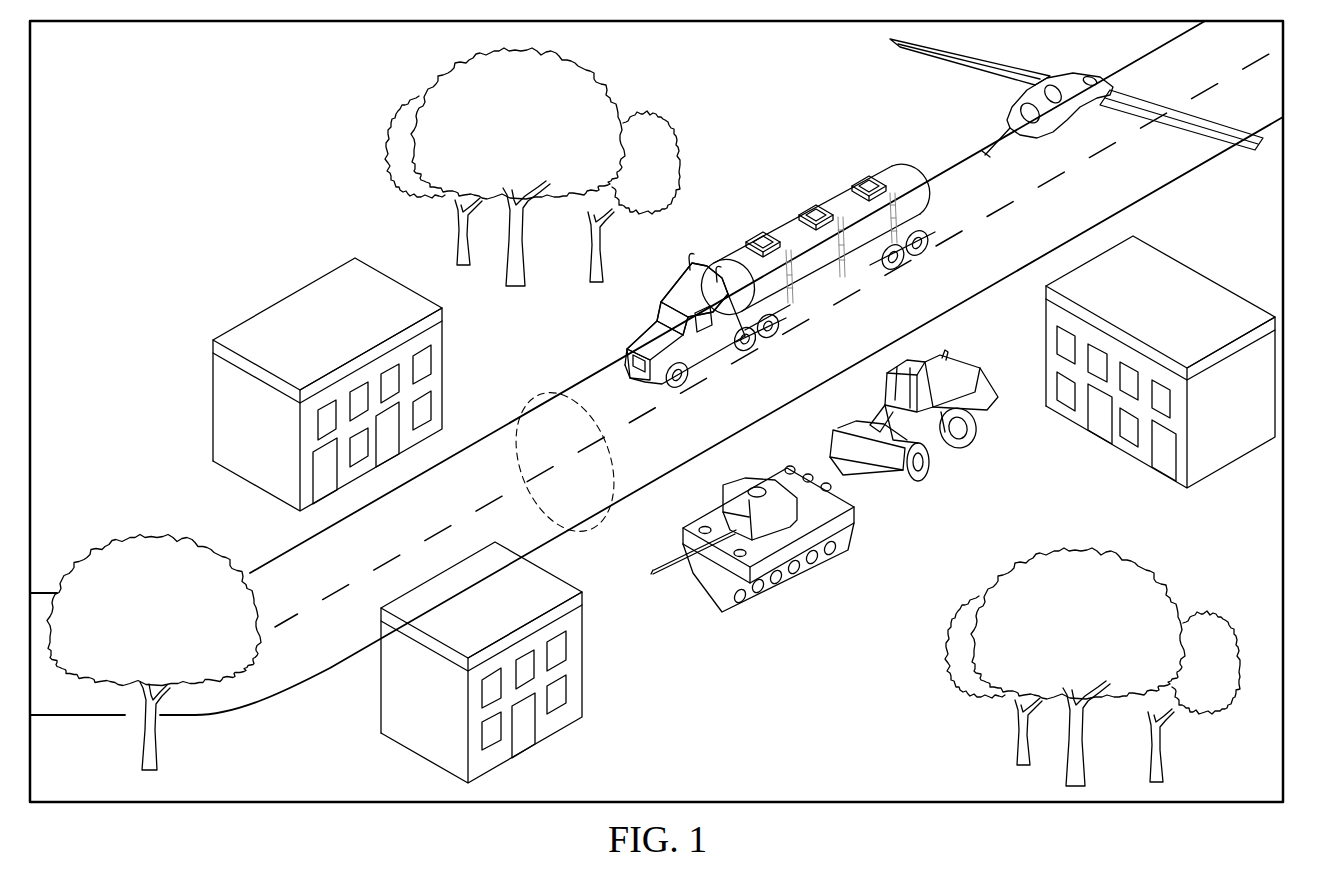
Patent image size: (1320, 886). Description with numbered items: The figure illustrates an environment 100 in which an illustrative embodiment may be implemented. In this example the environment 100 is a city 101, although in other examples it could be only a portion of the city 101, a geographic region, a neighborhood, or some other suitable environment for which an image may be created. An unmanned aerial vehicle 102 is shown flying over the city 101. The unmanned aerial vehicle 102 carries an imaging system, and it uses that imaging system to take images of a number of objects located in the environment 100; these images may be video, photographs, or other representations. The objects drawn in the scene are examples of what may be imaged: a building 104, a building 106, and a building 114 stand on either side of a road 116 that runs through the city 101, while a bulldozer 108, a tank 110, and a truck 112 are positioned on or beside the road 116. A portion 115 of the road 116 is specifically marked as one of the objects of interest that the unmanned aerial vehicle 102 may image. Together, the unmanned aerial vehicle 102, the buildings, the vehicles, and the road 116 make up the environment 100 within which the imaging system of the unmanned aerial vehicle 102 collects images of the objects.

The environment 100 is at (336, 808).
The city 101 is at (243, 156).
The unmanned aerial vehicle 102 is at (1095, 72).
The building 104 is at (281, 298).
The building 106 is at (1204, 272).
The bulldozer 108 is at (965, 446).
The tank 110 is at (794, 590).
The truck 112 is at (778, 222).
The building 114 is at (584, 695).
The portion of road 115 is at (523, 393).
The road 116 is at (245, 707).